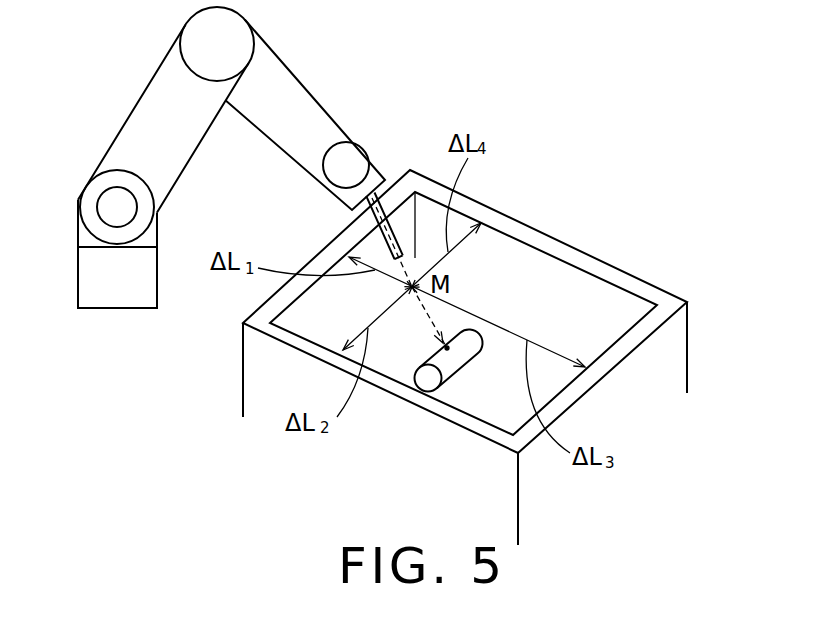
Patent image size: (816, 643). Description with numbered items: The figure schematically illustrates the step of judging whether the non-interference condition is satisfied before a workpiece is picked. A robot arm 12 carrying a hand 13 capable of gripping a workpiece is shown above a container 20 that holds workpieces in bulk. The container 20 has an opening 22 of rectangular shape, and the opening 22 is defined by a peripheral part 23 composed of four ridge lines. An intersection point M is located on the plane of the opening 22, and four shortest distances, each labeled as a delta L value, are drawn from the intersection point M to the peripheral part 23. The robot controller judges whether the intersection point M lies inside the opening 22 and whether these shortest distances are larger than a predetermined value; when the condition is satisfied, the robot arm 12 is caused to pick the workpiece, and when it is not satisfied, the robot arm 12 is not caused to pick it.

The robot arm 12 is at (148, 123).
The hand 13 is at (373, 220).
The container 20 is at (657, 367).
The opening 22 is at (530, 272).
The peripheral part 23 is at (490, 420).